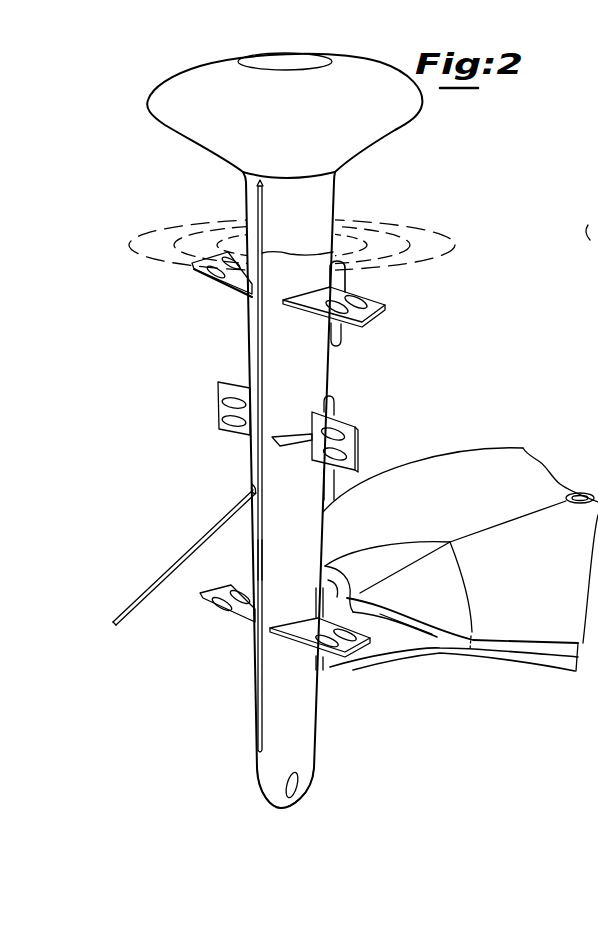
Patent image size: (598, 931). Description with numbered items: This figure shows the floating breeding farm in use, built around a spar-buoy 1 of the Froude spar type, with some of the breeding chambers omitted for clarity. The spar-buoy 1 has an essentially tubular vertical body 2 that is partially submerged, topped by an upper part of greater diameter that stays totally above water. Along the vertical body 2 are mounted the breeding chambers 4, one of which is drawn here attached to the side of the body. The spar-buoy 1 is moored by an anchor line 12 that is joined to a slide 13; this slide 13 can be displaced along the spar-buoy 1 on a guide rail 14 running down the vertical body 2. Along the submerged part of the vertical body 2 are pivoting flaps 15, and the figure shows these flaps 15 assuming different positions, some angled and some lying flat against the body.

The spar-buoy 1 is at (333, 373).
The vertical body 2 is at (307, 735).
The breeding chamber 4 is at (541, 624).
The anchor line 12 is at (170, 572).
The slide 13 is at (253, 488).
The guide rail 14 is at (262, 558).
The pivoting flap 15 is at (385, 306).